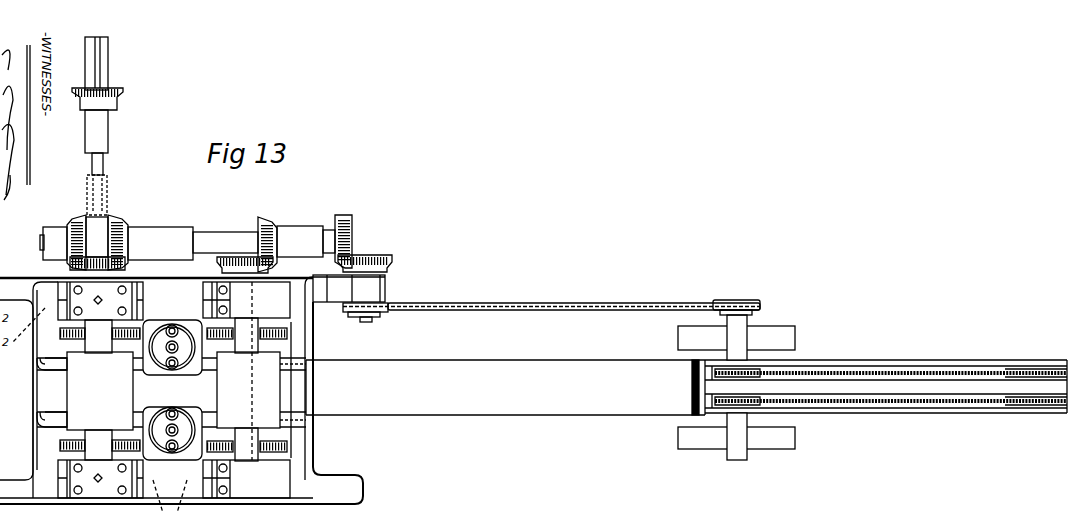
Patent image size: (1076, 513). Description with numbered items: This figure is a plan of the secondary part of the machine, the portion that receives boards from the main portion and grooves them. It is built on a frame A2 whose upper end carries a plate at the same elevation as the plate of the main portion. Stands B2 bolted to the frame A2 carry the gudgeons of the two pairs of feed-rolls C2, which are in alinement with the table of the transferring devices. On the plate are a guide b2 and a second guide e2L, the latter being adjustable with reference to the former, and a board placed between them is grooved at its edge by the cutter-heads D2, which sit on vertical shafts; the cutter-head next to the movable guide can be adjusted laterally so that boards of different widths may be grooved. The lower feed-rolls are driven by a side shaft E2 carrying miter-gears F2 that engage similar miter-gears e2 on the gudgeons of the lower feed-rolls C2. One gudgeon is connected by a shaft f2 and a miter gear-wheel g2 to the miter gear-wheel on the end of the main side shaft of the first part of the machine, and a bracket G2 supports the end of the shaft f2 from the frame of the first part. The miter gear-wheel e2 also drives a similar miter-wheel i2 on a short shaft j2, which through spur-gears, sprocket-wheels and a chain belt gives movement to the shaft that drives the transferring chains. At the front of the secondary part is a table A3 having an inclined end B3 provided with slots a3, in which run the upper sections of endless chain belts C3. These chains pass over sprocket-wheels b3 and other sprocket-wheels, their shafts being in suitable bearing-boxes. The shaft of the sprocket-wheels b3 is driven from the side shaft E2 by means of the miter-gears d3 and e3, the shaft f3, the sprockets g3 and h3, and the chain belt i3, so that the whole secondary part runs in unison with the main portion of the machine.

The frame A2 is at (314, 478).
The stands B2 is at (187, 292).
The feed-rolls C2 is at (100, 390).
The cutter-heads D2 is at (182, 380).
The miter-gears e2 is at (247, 275).
The lower rail e2L is at (33, 416).
The guide b2 is at (37, 362).
The bracket G2 is at (107, 66).
The miter gear-wheel g2 is at (124, 92).
The shaft f2 is at (104, 168).
The miter-wheel i2 is at (70, 218).
The miter-gears F2 is at (128, 215).
The short shaft j2 is at (40, 243).
The side shaft E2 is at (215, 246).
The miter-gear d3 is at (341, 219).
The miter-gear e3 is at (385, 258).
The sprocket g3 is at (390, 303).
The shaft f3 is at (366, 317).
The chain belt i3 is at (508, 303).
The table A3 is at (686, 387).
The inclined end B3 is at (898, 360).
The slots a3 is at (945, 360).
The endless chain belts C3 is at (1005, 370).
The sprocket-wheels b3 is at (752, 366).
The sprocket h3 is at (740, 300).